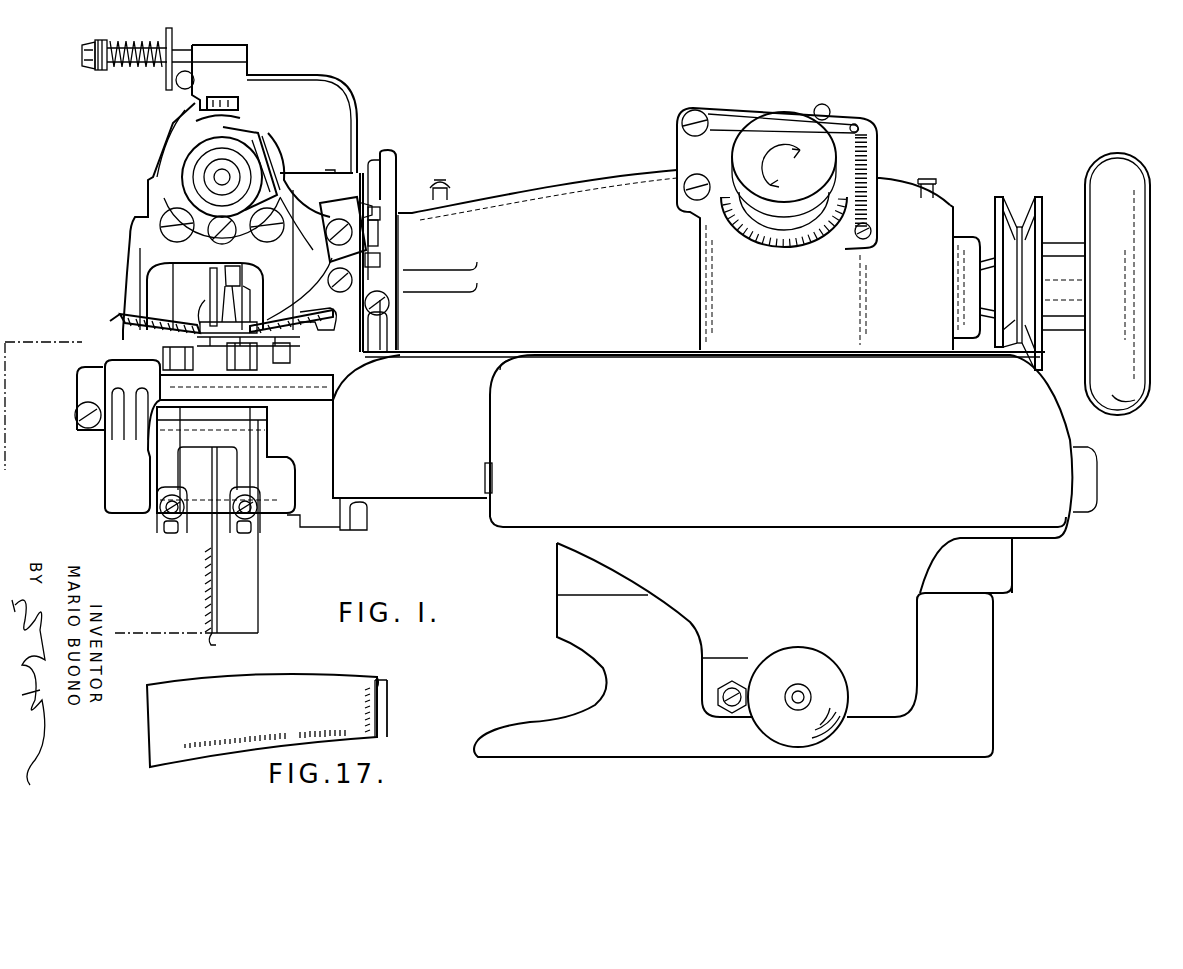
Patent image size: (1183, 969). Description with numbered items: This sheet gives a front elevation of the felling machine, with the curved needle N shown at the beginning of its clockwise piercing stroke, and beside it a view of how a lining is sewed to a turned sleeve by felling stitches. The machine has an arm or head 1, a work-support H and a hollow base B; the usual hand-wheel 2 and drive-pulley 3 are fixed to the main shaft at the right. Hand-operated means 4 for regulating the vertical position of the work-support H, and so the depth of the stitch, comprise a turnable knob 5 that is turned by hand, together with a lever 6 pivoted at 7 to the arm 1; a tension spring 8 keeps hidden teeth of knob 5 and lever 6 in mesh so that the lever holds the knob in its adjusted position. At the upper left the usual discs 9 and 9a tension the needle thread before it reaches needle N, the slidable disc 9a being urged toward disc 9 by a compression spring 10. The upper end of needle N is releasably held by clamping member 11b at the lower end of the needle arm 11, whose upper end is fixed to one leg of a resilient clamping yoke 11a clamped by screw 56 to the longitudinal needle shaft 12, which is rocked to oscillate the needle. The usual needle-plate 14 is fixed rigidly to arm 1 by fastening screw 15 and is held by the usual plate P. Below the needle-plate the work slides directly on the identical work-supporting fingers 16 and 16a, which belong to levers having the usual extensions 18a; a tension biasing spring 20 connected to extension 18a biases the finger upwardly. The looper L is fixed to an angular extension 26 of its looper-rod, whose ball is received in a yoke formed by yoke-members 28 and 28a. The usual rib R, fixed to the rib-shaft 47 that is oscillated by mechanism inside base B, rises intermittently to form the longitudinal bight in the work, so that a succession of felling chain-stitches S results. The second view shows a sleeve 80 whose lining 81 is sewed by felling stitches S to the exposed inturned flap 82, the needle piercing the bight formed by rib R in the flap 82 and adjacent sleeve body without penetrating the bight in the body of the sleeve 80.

In FIG. 1, the arm or head 1 is at (536, 192).
In FIG. 1, the hand-wheel 2 is at (1102, 163).
In FIG. 1, the drive-pulley 3 is at (1000, 200).
In FIG. 1, the hand-operated means 4 is at (763, 101).
In FIG. 1, the turnable knob 5 is at (792, 155).
In FIG. 1, the lever 6 is at (840, 122).
In FIG. 1, the pivot 7 is at (692, 120).
In FIG. 1, the tension spring 8 is at (868, 150).
In FIG. 1, the disc 9 is at (166, 32).
In FIG. 1, the disc 9a is at (173, 33).
In FIG. 1, the compression spring 10 is at (130, 68).
In FIG. 1, the needle arm 11 is at (288, 175).
In FIG. 1, the resilient clamping yoke 11a is at (347, 212).
In FIG. 1, the clamping member 11b is at (352, 236).
In FIG. 1, the needle shaft 12 is at (220, 177).
In FIG. 1, the needle-plate 14 is at (128, 318).
In FIG. 1, the fastening screw 15 is at (330, 322).
In FIG. 1, the work-supporting finger 16 is at (182, 340).
In FIG. 1, the work-supporting finger 16a is at (272, 340).
In FIG. 1, the extension 18a is at (176, 462).
In FIG. 1, the tension biasing spring 20 is at (160, 520).
In FIG. 1, the angular extension 26 is at (213, 298).
In FIG. 1, the yoke-member 28 is at (178, 290).
In FIG. 1, the yoke-member 28a is at (245, 284).
In FIG. 1, the rib-shaft 47 is at (297, 390).
In FIG. 1, the screw 56 is at (247, 125).
In FIG. 1, the sleeve 80 is at (48, 378).
In FIG. 17, the sleeve 80 is at (391, 679).
In FIG. 1, the lining 81 is at (213, 634).
In FIG. 17, the lining 81 is at (378, 677).
In FIG. 17, the inturned flap 82 is at (381, 716).
In FIG. 1, the base B is at (534, 718).
In FIG. 1, the work-support H is at (587, 352).
In FIG. 1, the looper L is at (252, 290).
In FIG. 1, the curved needle N is at (306, 296).
In FIG. 1, the plate P is at (130, 250).
In FIG. 1, the rib R is at (192, 383).
In FIG. 1, the felling chain-stitches S is at (210, 597).
In FIG. 17, the felling chain-stitches S is at (370, 692).